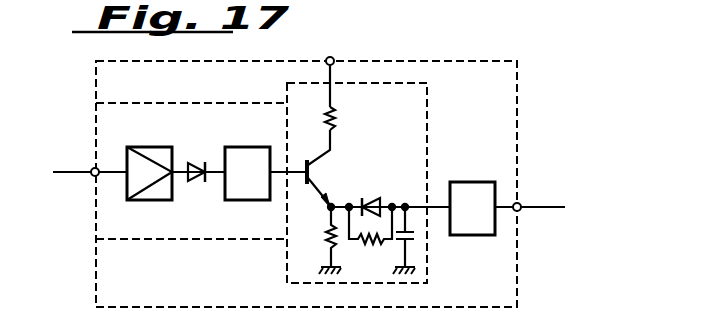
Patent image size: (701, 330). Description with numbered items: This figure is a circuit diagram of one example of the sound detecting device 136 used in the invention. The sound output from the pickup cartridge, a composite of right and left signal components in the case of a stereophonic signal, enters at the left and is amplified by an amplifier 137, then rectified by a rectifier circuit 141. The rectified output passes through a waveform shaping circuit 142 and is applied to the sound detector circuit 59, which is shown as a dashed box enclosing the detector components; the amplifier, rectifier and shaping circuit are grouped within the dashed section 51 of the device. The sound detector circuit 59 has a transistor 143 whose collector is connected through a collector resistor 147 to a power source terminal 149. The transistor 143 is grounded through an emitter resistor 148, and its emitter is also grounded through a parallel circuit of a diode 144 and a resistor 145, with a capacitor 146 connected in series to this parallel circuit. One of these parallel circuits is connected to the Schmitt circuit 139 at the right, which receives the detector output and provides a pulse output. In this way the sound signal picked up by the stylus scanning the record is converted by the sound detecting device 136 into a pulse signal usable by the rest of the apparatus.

The sound detecting device 136 is at (282, 57).
The demodulator section 51 is at (216, 242).
The sound detector circuit 59 is at (428, 100).
The amplifier 137 is at (146, 147).
The rectifier circuit 141 is at (197, 162).
The waveform shaping circuit 142 is at (248, 147).
The transistor 143 is at (311, 172).
The power source terminal 149 is at (337, 59).
The collector resistor 147 is at (335, 118).
The emitter resistor 148 is at (330, 233).
The diode 144 is at (374, 200).
The resistor 145 is at (372, 242).
The capacitor 146 is at (416, 238).
The Schmitt circuit 139 is at (472, 182).